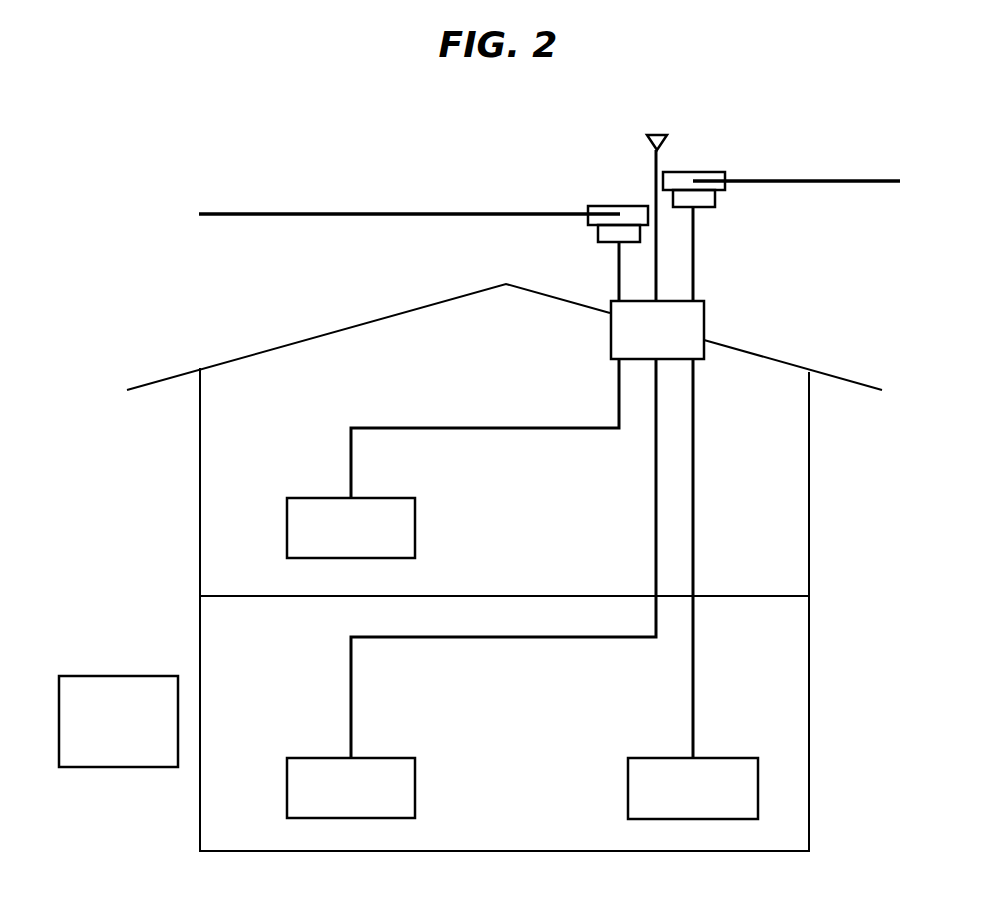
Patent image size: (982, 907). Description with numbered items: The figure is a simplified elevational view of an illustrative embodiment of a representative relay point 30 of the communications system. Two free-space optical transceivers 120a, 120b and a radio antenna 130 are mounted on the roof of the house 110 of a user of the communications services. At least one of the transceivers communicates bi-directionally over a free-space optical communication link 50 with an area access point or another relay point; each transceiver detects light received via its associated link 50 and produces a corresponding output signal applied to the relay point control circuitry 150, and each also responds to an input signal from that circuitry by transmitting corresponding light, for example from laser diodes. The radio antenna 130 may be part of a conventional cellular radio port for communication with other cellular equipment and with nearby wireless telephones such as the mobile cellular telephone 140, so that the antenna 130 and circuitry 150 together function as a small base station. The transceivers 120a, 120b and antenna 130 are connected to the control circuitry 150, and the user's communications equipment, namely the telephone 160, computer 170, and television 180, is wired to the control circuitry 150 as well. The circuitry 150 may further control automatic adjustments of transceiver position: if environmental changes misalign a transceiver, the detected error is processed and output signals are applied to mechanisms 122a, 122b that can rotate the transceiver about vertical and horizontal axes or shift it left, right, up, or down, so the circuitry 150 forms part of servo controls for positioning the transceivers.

The relay point 30 is at (413, 123).
The free-space optical communication link 50 is at (549, 169).
The house 110 is at (500, 567).
The free-space optical transceiver 120a is at (701, 149).
The free-space optical transceiver 120b is at (597, 186).
The mechanism 122a is at (724, 245).
The mechanism 122b is at (583, 263).
The radio antenna 130 is at (624, 201).
The mobile cellular telephone 140 is at (118, 687).
The relay point control circuitry 150 is at (692, 328).
The telephone 160 is at (653, 785).
The computer 170 is at (389, 788).
The television 180 is at (389, 528).